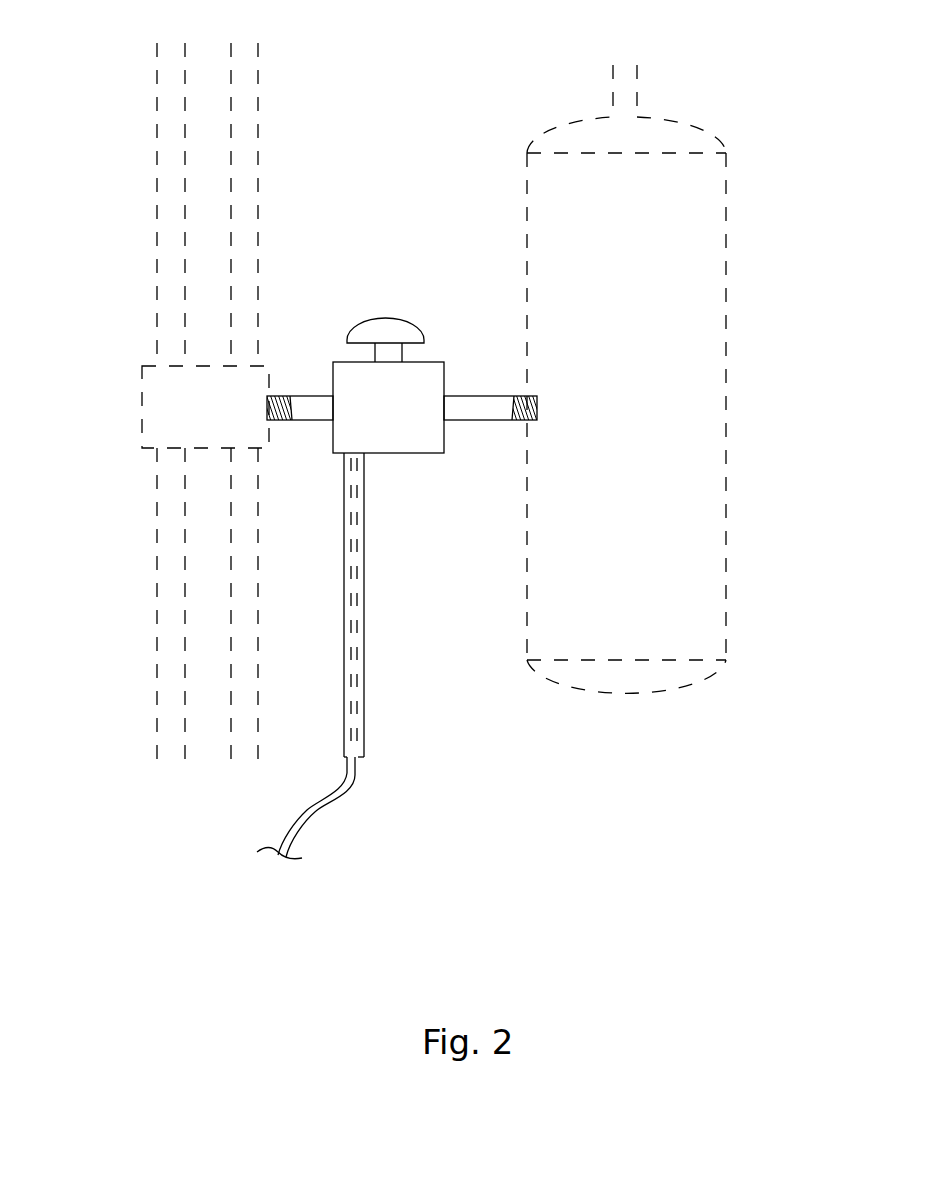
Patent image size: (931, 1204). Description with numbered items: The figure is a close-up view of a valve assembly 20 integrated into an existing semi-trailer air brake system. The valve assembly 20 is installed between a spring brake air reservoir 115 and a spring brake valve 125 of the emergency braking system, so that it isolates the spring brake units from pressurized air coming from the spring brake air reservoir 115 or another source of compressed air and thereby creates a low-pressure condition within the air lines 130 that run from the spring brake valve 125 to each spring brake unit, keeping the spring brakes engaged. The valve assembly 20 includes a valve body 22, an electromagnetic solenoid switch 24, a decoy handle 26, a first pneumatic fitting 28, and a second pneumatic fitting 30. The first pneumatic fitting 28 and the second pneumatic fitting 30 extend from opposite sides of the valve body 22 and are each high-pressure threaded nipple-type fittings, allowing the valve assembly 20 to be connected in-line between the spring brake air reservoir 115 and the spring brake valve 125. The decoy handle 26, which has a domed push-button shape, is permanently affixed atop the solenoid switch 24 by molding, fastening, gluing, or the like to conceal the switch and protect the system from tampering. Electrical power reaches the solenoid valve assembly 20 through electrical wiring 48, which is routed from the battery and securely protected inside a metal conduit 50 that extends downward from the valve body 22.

The valve assembly 20 is at (461, 253).
The valve body 22 is at (410, 455).
The electromagnetic solenoid switch 24 is at (392, 353).
The decoy handle 26 is at (368, 333).
The first pneumatic fitting 28 is at (308, 422).
The second pneumatic fitting 30 is at (487, 422).
The electrical wiring 48 is at (356, 722).
The metal conduit 50 is at (364, 622).
The spring brake air reservoir 115 is at (727, 177).
The spring brake valve 125 is at (142, 367).
The air lines 130 is at (185, 105).